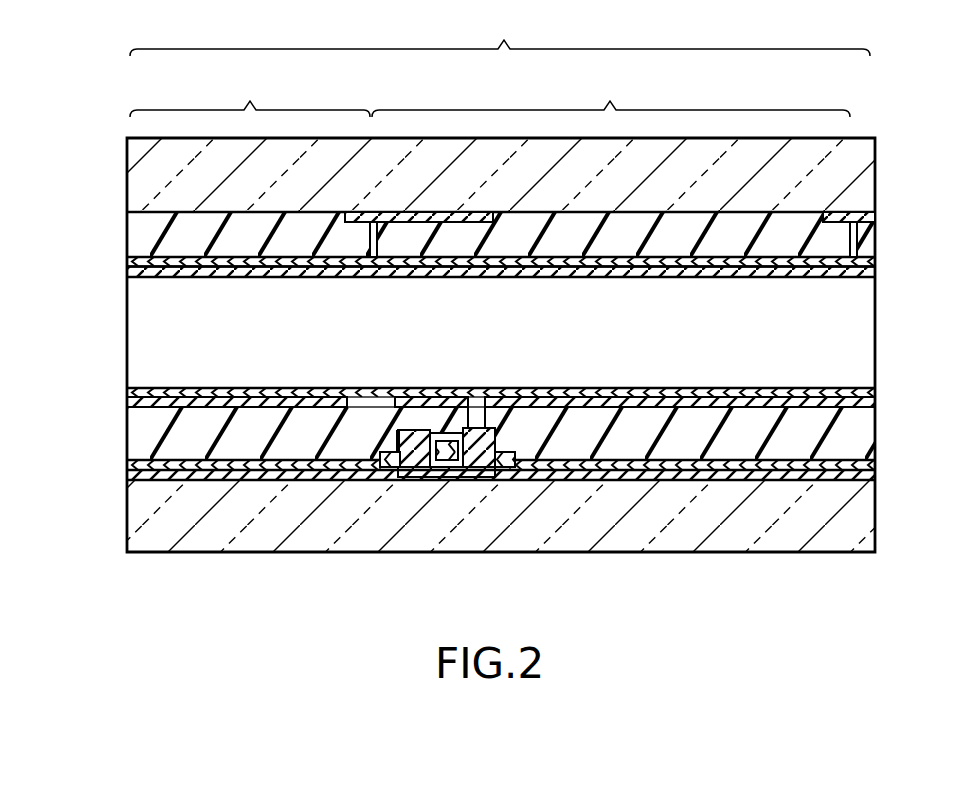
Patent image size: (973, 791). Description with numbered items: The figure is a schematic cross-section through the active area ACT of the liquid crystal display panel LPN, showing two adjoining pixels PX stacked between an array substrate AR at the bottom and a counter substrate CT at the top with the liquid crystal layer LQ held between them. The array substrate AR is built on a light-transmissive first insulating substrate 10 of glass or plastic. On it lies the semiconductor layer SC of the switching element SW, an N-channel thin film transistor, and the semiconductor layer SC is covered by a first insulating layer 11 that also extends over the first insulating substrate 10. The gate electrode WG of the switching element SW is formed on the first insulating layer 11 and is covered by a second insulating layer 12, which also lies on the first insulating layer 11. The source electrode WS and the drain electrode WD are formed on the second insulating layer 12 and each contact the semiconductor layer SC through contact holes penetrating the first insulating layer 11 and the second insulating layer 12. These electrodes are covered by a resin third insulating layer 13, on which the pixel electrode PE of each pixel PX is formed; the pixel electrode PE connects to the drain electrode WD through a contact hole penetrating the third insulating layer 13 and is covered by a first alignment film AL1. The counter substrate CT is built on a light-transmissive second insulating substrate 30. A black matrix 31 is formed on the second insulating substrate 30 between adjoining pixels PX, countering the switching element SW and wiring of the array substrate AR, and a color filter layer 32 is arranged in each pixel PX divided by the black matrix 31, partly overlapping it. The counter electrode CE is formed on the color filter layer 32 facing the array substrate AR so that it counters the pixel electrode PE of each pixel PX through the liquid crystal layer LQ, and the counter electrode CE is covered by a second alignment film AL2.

The active area ACT is at (500, 33).
The pixel PX is at (490, 95).
The counter substrate CT is at (117, 159).
The second insulating substrate 30 is at (130, 190).
The color filter layer 32 is at (215, 242).
The black matrix 31 is at (437, 218).
The counter electrode CE is at (130, 259).
The second alignment film AL2 is at (130, 270).
The liquid crystal layer LQ is at (130, 336).
The liquid crystal display panel LPN is at (887, 333).
The first alignment film AL1 is at (130, 392).
The pixel electrode PE is at (218, 394).
The third insulating layer 13 is at (130, 425).
The source electrode WS is at (406, 436).
The gate electrode WG is at (439, 452).
The drain electrode WD is at (487, 440).
The second insulating layer 12 is at (130, 463).
The semiconductor layer SC is at (447, 479).
The first insulating layer 11 is at (130, 477).
The first insulating substrate 10 is at (130, 514).
The array substrate AR is at (117, 545).
The switching element SW is at (399, 490).